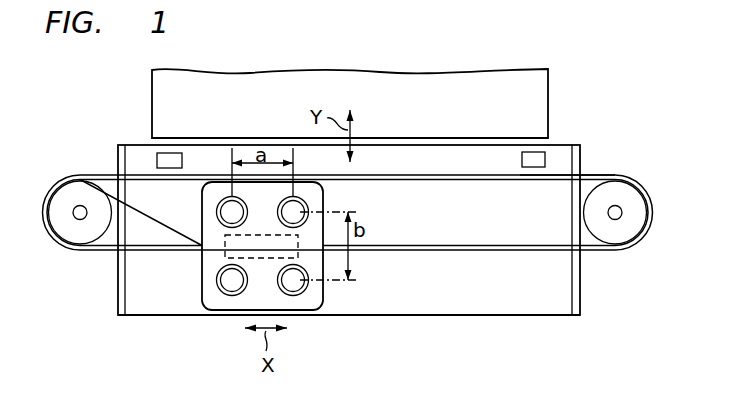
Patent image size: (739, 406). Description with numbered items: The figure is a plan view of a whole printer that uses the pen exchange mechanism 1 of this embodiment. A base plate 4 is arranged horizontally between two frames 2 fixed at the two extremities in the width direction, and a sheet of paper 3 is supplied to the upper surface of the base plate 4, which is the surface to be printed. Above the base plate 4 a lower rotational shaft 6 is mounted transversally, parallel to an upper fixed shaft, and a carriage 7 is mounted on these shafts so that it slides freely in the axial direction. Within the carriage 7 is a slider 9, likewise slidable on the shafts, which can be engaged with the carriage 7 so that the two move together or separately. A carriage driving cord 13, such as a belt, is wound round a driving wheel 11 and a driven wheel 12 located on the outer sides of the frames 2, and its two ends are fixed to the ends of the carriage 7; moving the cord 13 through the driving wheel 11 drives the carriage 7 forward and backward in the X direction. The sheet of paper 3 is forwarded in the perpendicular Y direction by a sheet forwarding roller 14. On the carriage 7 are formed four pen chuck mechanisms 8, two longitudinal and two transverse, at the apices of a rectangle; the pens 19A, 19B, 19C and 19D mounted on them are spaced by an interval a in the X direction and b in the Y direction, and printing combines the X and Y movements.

The pen exchange mechanism 1 is at (184, 300).
The frame 2 is at (118, 297).
The sheet of paper 3 is at (549, 90).
The base plate 4 is at (498, 298).
The lower rotational shaft 6 is at (560, 250).
The carriage 7 is at (293, 309).
The pen chuck mechanism 8 is at (222, 204).
The slider 9 is at (262, 262).
The driving wheel 11 is at (80, 185).
The driven wheel 12 is at (614, 185).
The carriage driving cord 13 is at (588, 175).
The sheet forwarding roller 14 is at (157, 158).
The pen 19A is at (220, 284).
The pen 19B is at (317, 280).
The pen 19C is at (228, 213).
The pen 19D is at (297, 212).